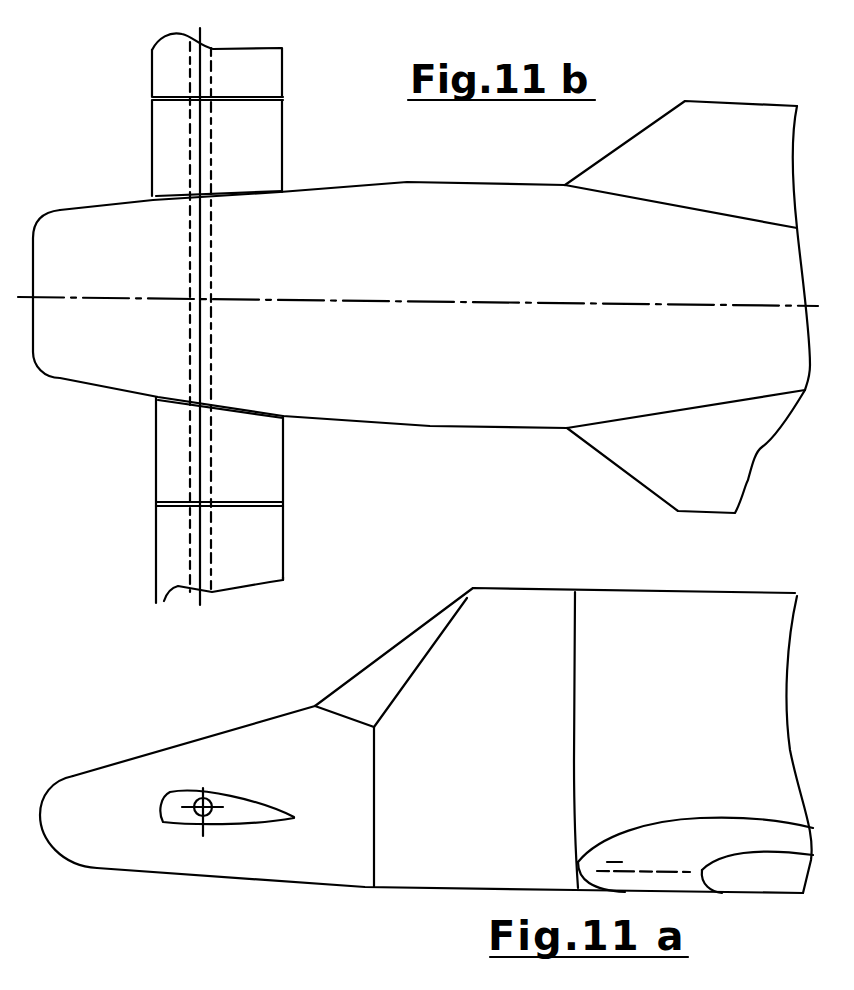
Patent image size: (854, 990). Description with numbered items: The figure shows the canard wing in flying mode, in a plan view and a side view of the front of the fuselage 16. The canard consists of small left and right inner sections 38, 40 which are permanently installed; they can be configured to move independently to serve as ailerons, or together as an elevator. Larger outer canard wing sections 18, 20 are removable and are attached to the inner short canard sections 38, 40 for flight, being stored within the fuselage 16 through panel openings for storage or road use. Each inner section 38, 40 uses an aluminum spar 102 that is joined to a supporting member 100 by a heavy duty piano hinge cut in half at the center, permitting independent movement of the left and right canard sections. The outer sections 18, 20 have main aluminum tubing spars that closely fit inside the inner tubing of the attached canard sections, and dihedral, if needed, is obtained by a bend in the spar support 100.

In FIG. 11b, the fuselage 16 is at (433, 362).
In FIG. 11a, the fuselage 16 is at (632, 632).
In FIG. 11b, the outer canard wing section 18 is at (253, 548).
In FIG. 11b, the outer canard wing section 20 is at (233, 65).
In FIG. 11b, the inner canard wing section 38 is at (245, 443).
In FIG. 11b, the inner canard wing section 40 is at (170, 133).
In FIG. 11b, the supporting member 100 is at (185, 330).
In FIG. 11a, the supporting member 100 is at (167, 861).
In FIG. 11b, the aluminum spar 102 is at (195, 322).